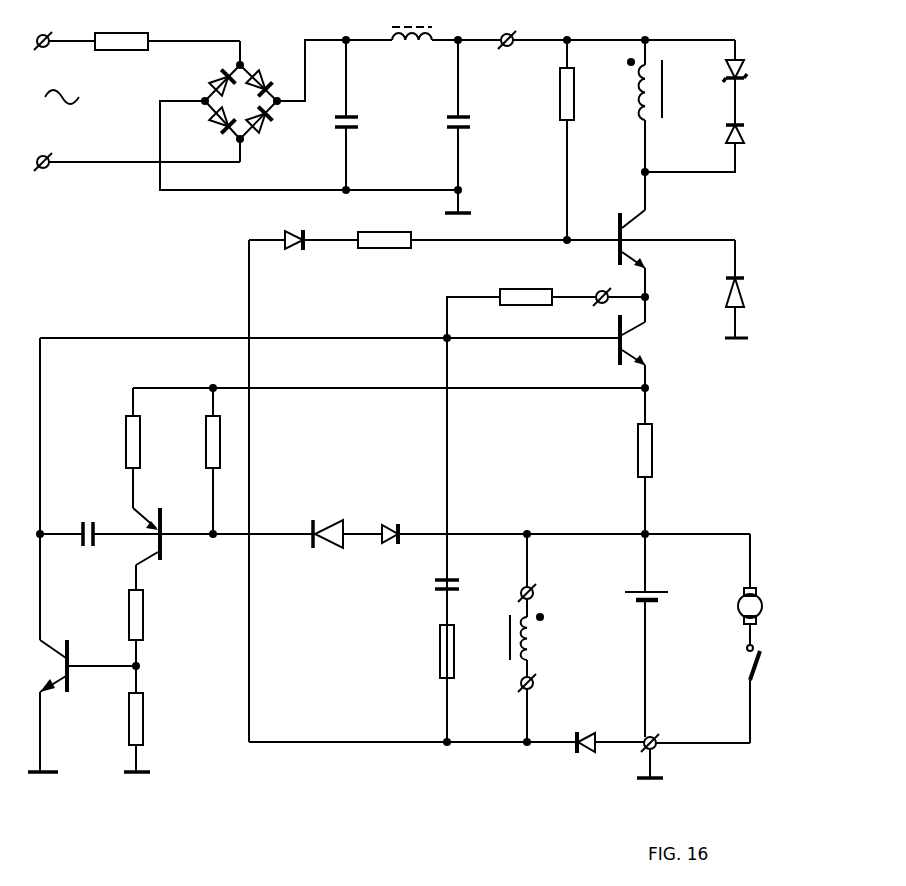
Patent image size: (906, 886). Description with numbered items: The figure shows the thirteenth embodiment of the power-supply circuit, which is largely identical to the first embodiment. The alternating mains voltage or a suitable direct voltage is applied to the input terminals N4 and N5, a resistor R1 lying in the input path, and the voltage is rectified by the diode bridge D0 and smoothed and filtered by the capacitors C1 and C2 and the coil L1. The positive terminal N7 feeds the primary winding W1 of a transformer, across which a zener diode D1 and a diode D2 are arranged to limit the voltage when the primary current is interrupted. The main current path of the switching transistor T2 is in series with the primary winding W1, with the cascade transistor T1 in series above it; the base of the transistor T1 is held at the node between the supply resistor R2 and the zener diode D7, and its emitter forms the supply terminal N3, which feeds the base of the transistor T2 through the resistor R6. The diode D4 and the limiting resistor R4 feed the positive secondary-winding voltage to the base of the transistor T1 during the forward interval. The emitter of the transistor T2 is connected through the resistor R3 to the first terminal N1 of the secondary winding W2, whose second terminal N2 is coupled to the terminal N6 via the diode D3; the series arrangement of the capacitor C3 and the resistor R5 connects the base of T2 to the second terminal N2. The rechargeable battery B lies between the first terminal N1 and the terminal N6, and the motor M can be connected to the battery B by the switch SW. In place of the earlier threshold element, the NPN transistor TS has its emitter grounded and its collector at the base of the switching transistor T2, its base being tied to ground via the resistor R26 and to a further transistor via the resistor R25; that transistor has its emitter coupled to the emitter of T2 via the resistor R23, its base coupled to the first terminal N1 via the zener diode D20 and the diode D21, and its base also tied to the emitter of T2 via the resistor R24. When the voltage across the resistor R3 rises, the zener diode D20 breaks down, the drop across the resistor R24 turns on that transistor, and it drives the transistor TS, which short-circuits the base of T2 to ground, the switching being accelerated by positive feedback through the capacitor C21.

The input terminal N4 is at (40, 55).
The input terminal N5 is at (40, 181).
The resistor R1 is at (121, 55).
The diode bridge D0 is at (241, 102).
The coil L1 is at (412, 49).
The positive terminal N7 is at (512, 51).
The capacitor C1 is at (361, 122).
The capacitor C2 is at (473, 122).
The supply resistor R2 is at (581, 94).
The primary winding W1 is at (666, 90).
The zener diode D1 is at (750, 70).
The diode D2 is at (752, 131).
The cascade transistor T1 is at (645, 237).
The switching transistor T2 is at (645, 340).
The zener diode D7 is at (753, 308).
The supply terminal N3 is at (598, 286).
The resistor R6 is at (526, 286).
The diode D4 is at (280, 231).
The limiting resistor R4 is at (384, 254).
The resistor R3 is at (660, 450).
The resistor R23 is at (112, 442).
The resistor R24 is at (193, 442).
The capacitor C21 is at (82, 547).
The zener diode D20 is at (320, 520).
The diode D21 is at (397, 518).
The capacitor C3 is at (432, 585).
The resistor R5 is at (432, 651).
The first terminal N1 is at (514, 589).
The second terminal N2 is at (514, 684).
The secondary winding W2 is at (539, 637).
The resistor R25 is at (155, 615).
The resistor R26 is at (155, 719).
The transistor TS is at (48, 666).
The rechargeable battery B is at (636, 602).
The motor M is at (760, 606).
The switch SW is at (775, 662).
The diode D3 is at (585, 730).
The terminal N6 is at (661, 730).